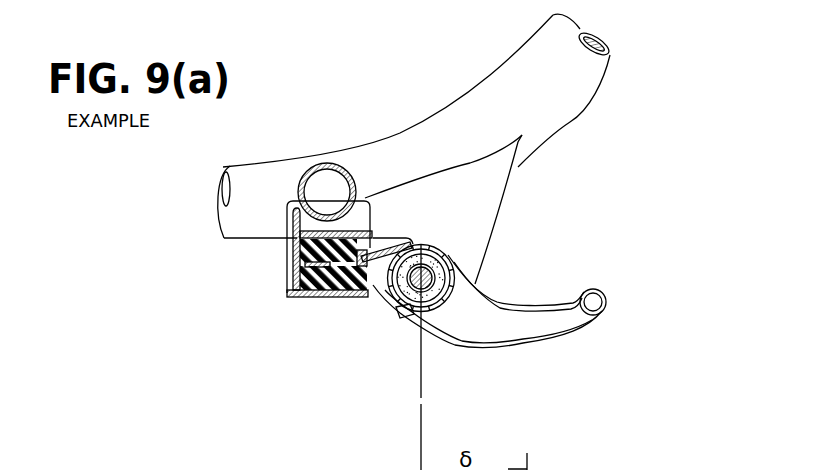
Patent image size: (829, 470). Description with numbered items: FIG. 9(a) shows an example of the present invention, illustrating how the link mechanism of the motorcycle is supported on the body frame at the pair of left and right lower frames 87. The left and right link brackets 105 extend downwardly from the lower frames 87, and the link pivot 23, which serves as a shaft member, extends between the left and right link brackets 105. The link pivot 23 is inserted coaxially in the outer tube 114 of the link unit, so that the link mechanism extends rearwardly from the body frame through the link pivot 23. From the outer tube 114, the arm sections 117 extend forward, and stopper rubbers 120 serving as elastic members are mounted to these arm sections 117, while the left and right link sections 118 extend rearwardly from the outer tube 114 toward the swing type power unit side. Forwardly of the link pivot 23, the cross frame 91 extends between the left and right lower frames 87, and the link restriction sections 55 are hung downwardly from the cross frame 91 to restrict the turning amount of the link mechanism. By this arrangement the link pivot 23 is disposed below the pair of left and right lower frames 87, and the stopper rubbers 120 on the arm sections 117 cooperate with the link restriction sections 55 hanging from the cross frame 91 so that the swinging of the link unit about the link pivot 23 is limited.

The lower frames 87 is at (553, 117).
The cross frame 91 is at (318, 165).
The link brackets 105 is at (490, 216).
The link restriction sections 55 is at (296, 304).
The stopper rubbers 120 is at (327, 300).
The arm sections 117 is at (377, 253).
The outer tube 114 is at (418, 307).
The link sections 118 is at (563, 322).
The link pivot 23 is at (407, 312).